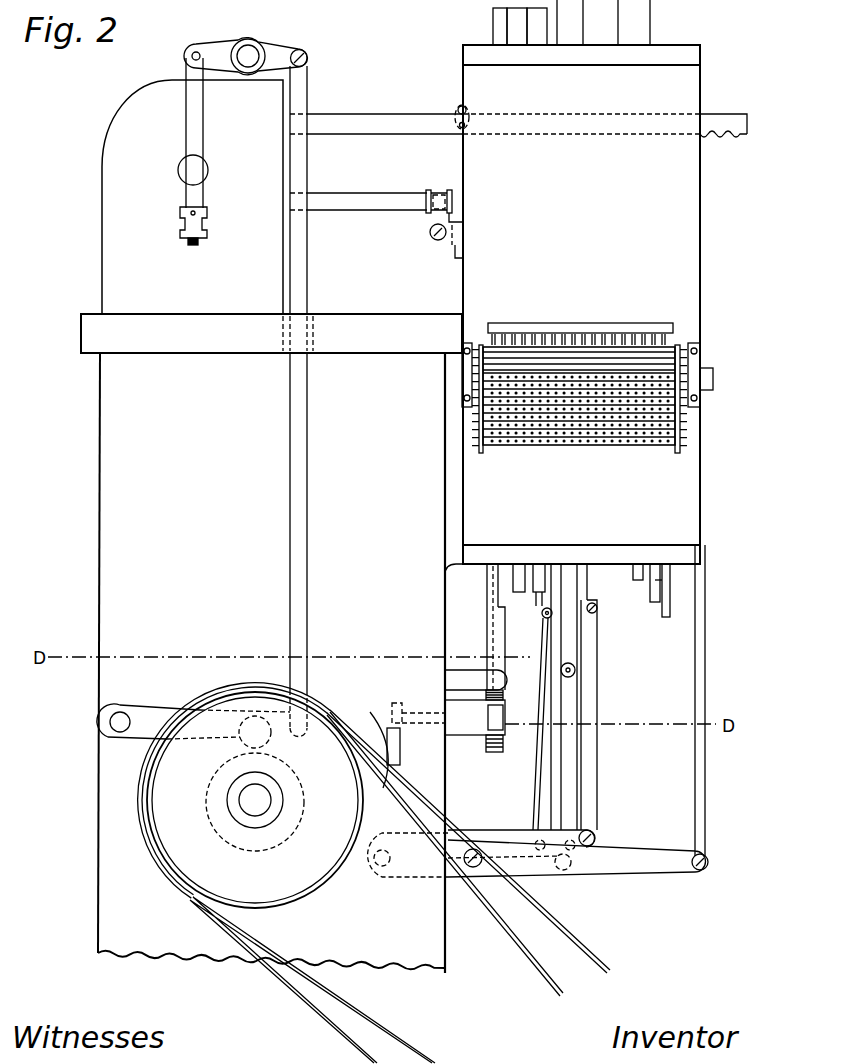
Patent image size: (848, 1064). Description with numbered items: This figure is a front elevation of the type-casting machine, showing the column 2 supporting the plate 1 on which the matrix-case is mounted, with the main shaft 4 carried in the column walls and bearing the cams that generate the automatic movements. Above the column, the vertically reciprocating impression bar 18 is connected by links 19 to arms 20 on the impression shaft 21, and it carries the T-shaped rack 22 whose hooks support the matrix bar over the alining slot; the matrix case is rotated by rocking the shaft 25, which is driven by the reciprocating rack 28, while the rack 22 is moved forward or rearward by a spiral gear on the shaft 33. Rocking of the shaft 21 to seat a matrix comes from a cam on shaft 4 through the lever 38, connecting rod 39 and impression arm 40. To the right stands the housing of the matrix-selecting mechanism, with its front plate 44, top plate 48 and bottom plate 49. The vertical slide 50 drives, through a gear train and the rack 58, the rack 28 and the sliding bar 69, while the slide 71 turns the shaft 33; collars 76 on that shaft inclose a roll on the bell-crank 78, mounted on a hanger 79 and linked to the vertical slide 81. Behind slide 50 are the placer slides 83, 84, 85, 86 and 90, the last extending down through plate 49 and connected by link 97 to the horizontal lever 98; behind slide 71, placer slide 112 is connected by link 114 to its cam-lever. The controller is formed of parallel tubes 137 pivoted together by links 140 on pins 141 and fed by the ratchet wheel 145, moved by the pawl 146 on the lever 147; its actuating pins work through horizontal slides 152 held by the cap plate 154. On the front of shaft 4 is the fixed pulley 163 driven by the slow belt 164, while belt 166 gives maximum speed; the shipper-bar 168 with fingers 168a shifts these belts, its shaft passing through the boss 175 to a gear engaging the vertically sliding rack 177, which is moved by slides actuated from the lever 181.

The plate 1 is at (271, 333).
The column 2 is at (271, 526).
The shaft 4 is at (255, 800).
The impression bar 18 is at (180, 214).
The links 19 is at (197, 104).
The arms 20 is at (216, 47).
The shaft 21 is at (248, 56).
The T-shaped rack 22 is at (190, 239).
The shaft 25 is at (207, 169).
The reciprocating rack 28 is at (379, 119).
The shaft 33 is at (358, 201).
The lever 38 is at (193, 726).
The connecting rod 39 is at (305, 246).
The impression arm 40 is at (279, 48).
The front plate 44 is at (581, 129).
The top plate 48 is at (581, 56).
The bottom plate 49 is at (581, 556).
The vertical slide 50 is at (634, 22).
The rack 58 is at (715, 122).
The vertically sliding bar 69 is at (540, 26).
The slide 71 is at (571, 22).
The collars 76 is at (450, 190).
The bell-crank 78 is at (430, 225).
The hanger 79 is at (455, 248).
The vertical slide 81 is at (522, 26).
The placer slide 83 is at (645, 581).
The placer slide 84 is at (650, 601).
The placer slide 85 is at (657, 606).
The placer slide 86 is at (668, 617).
The placer slide 90 is at (606, 611).
The link 97 is at (590, 699).
The horizontal lever 98 is at (508, 832).
The placer slide 112 is at (543, 600).
The link 114 is at (540, 746).
The tubes 137 is at (548, 445).
The links 140 is at (481, 451).
The pins 141 is at (680, 452).
The ratchet wheel 145 is at (705, 358).
The pawl 146 is at (706, 696).
The lever 147 is at (537, 853).
The horizontal slides 152 is at (517, 333).
The cap plate 154 is at (574, 332).
The fixed pulley 163 is at (286, 873).
The belt 164 is at (561, 927).
The belt 166 is at (538, 966).
The shipper-bar 168 is at (401, 747).
The fingers 168a is at (399, 734).
The boss 175 is at (475, 721).
The vertically sliding rack 177 is at (493, 27).
The lever 181 is at (476, 678).